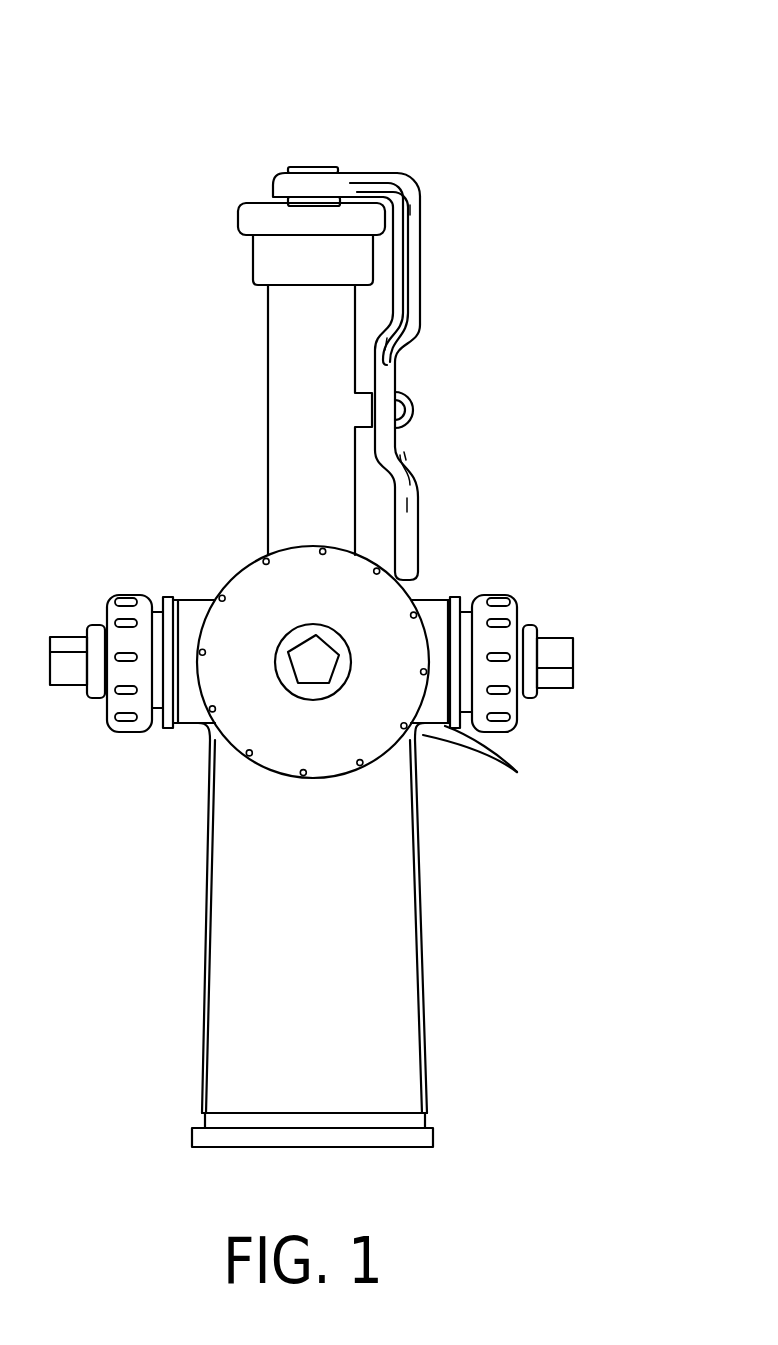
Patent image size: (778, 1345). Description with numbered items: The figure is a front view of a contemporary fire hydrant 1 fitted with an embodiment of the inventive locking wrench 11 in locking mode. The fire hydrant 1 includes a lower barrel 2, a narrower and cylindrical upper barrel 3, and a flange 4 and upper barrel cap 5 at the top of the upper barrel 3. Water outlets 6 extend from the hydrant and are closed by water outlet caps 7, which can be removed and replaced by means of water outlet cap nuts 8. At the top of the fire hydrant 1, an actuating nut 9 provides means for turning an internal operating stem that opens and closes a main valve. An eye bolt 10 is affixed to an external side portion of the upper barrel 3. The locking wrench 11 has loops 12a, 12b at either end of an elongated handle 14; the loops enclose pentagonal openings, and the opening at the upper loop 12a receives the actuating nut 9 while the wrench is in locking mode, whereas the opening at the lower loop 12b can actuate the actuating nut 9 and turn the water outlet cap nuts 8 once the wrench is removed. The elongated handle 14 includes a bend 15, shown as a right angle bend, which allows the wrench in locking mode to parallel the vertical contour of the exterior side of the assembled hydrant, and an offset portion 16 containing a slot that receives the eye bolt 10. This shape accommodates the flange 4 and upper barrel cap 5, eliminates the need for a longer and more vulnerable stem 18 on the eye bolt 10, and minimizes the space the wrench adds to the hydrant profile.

The fire hydrant 1 is at (165, 56).
The lower barrel 2 is at (425, 972).
The upper barrel 3 is at (252, 420).
The flange 4 is at (255, 272).
The upper barrel cap 5 is at (240, 220).
The water outlets 6 is at (158, 736).
The water outlet caps 7 is at (523, 715).
The water outlet cap nuts 8 is at (573, 652).
The actuating nut 9 is at (307, 167).
The eye bolt 10 is at (413, 410).
The locking wrench 11 is at (423, 272).
The loop 12a is at (267, 188).
The loop 12b is at (418, 543).
The elongated handle 14 is at (392, 448).
The bend 15 is at (407, 182).
The offset portion 16 is at (397, 363).
The stem 18 is at (353, 413).